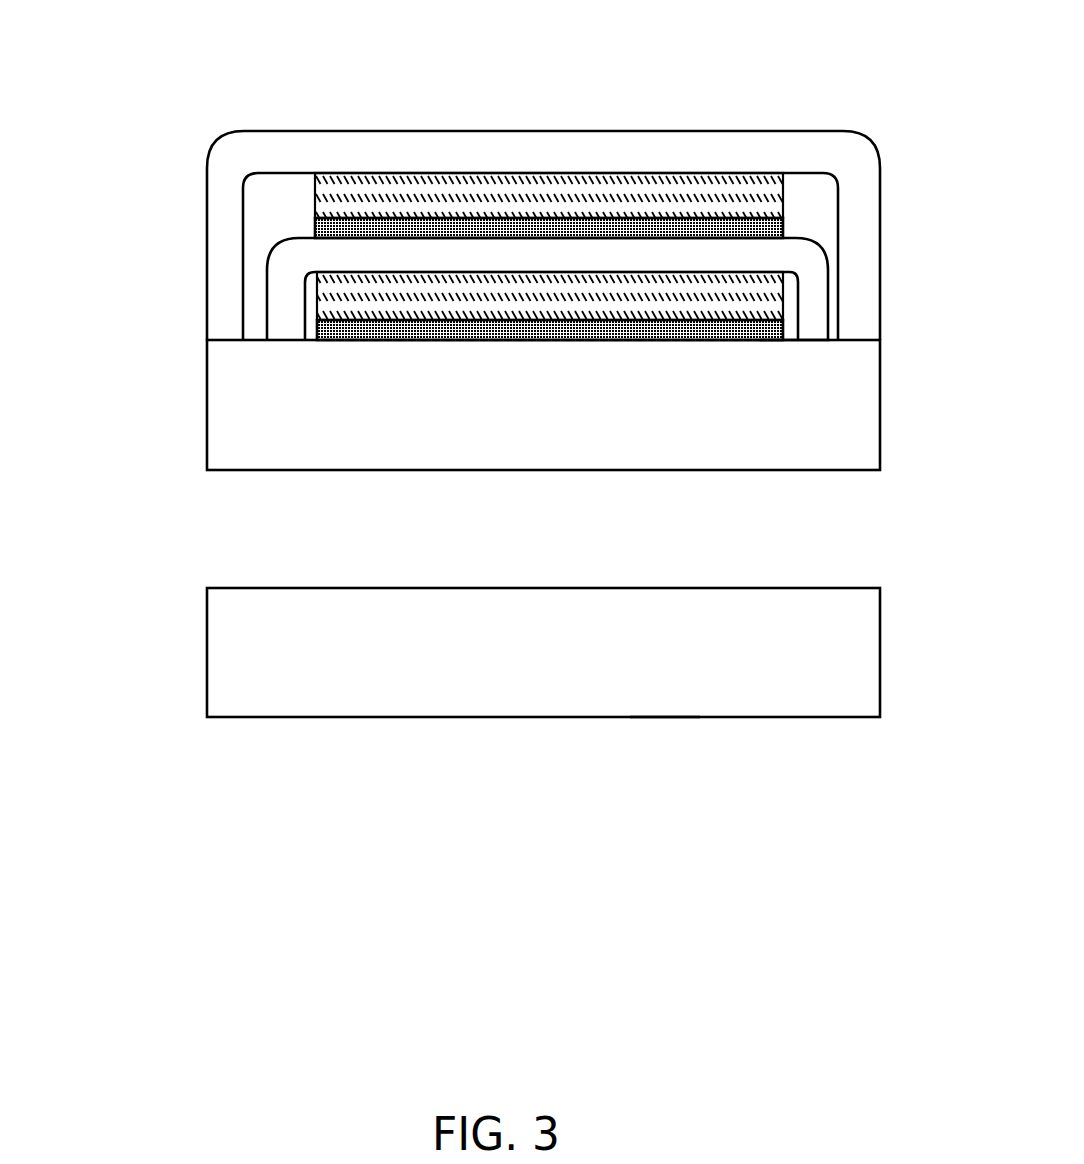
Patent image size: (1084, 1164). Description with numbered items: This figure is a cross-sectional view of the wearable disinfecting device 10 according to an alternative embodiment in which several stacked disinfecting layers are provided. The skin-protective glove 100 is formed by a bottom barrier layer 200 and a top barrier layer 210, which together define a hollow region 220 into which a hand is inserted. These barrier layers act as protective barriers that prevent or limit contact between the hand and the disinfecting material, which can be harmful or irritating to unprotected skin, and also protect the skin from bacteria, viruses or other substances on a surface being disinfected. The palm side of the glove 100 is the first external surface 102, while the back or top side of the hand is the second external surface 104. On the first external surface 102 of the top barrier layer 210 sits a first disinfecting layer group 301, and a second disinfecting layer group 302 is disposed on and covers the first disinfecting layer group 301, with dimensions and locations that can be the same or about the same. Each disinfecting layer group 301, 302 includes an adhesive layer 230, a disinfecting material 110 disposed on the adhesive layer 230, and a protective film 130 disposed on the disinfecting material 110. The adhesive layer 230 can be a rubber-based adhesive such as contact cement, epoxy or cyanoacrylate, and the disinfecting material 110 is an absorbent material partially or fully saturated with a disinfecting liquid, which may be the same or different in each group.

The wearable disinfecting device 10 is at (203, 67).
The skin-protective glove 100 is at (155, 392).
The first external surface 102 is at (793, 341).
The second external surface 104 is at (665, 718).
The disinfecting material 110 is at (612, 198).
The protective film 130 is at (500, 131).
The bottom barrier layer 200 is at (562, 672).
The top barrier layer 210 is at (562, 432).
The hollow region 220 is at (852, 547).
The adhesive layer 230 is at (722, 230).
The first disinfecting layer group 301 is at (273, 232).
The second disinfecting layer group 302 is at (204, 142).